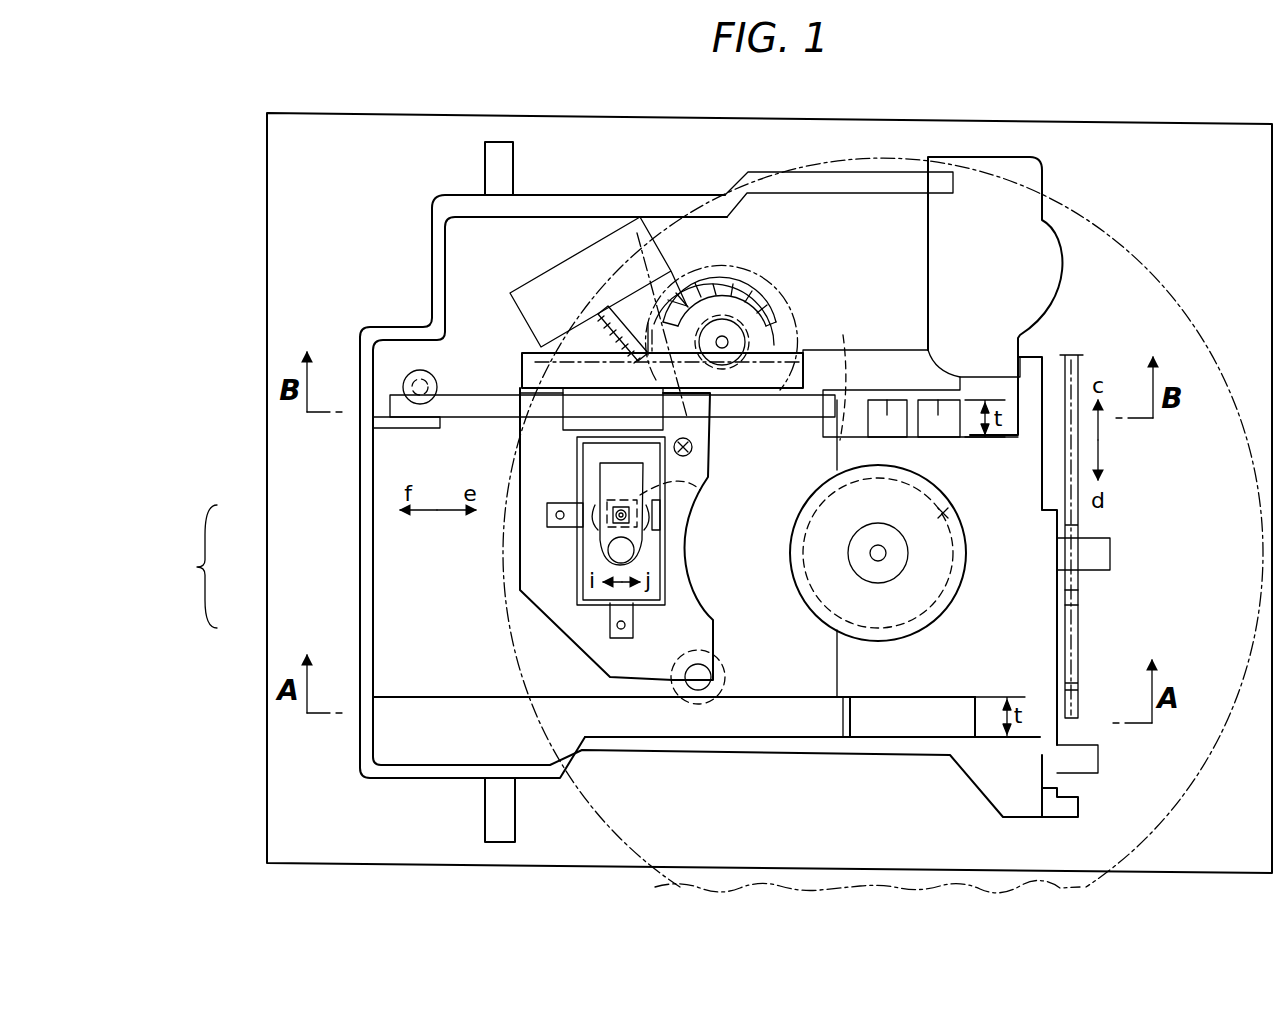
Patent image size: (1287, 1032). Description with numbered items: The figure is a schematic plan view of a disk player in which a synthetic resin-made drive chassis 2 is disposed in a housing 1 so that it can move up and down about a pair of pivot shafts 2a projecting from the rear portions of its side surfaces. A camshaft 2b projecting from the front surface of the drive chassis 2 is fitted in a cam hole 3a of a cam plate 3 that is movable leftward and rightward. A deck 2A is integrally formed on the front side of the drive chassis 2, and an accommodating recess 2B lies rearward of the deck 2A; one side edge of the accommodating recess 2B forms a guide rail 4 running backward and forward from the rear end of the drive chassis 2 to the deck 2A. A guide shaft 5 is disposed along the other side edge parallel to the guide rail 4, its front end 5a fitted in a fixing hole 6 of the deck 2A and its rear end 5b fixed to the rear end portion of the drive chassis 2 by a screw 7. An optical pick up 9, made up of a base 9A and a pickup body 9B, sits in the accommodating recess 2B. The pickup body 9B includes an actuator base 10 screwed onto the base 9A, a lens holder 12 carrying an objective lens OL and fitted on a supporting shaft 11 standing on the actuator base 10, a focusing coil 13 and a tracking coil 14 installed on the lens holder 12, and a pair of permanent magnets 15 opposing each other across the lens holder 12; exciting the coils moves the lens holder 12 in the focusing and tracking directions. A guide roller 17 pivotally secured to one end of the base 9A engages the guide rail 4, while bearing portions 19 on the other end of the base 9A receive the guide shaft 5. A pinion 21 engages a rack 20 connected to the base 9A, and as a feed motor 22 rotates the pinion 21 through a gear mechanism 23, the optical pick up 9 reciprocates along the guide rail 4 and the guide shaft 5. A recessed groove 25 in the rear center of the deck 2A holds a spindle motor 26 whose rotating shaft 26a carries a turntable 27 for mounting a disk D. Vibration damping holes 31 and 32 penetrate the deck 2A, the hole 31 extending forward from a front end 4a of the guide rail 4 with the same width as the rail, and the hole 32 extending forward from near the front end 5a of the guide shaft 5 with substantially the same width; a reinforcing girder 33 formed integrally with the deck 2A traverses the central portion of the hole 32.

The housing 1 is at (283, 238).
The drive chassis 2 is at (428, 252).
The pivot shafts 2a is at (498, 170).
The deck 2A is at (1033, 666).
The accommodating recess 2B is at (412, 641).
The camshaft 2b is at (1098, 555).
The cam plate 3 is at (1068, 355).
The cam hole 3a is at (1075, 605).
The guide rail 4 is at (505, 690).
The front end of the guide rail 4a is at (845, 720).
The guide shaft 5 is at (783, 424).
The front end of the guide shaft 5a is at (842, 374).
The rear end of the guide shaft 5b is at (415, 405).
The fixing hole 6 is at (838, 441).
The screw 7 is at (428, 377).
The optical pick up 9 is at (198, 566).
The base 9A is at (515, 553).
The pickup body 9B is at (568, 610).
The actuator base 10 is at (638, 620).
The supporting shaft 11 is at (618, 512).
The lens holder 12 is at (620, 470).
The focusing coil 13 is at (703, 490).
The tracking coil 14 is at (597, 555).
The permanent magnets 15 is at (576, 522).
The guide roller 17 is at (690, 690).
The bearing portions 19 is at (518, 391).
The rack 20 is at (711, 319).
The pinion 21 is at (735, 317).
The feed motor 22 is at (537, 292).
The gear mechanism 23 is at (688, 303).
The recessed groove 25 is at (835, 630).
The spindle motor 26 is at (963, 516).
The rotating shaft 26a is at (883, 553).
The turntable 27 is at (963, 588).
The vibration damping hole 31 is at (903, 722).
The vibration damping hole 32 is at (935, 415).
The reinforcing girder 33 is at (913, 437).
The disk D is at (1085, 222).
The objective lens OL is at (630, 525).